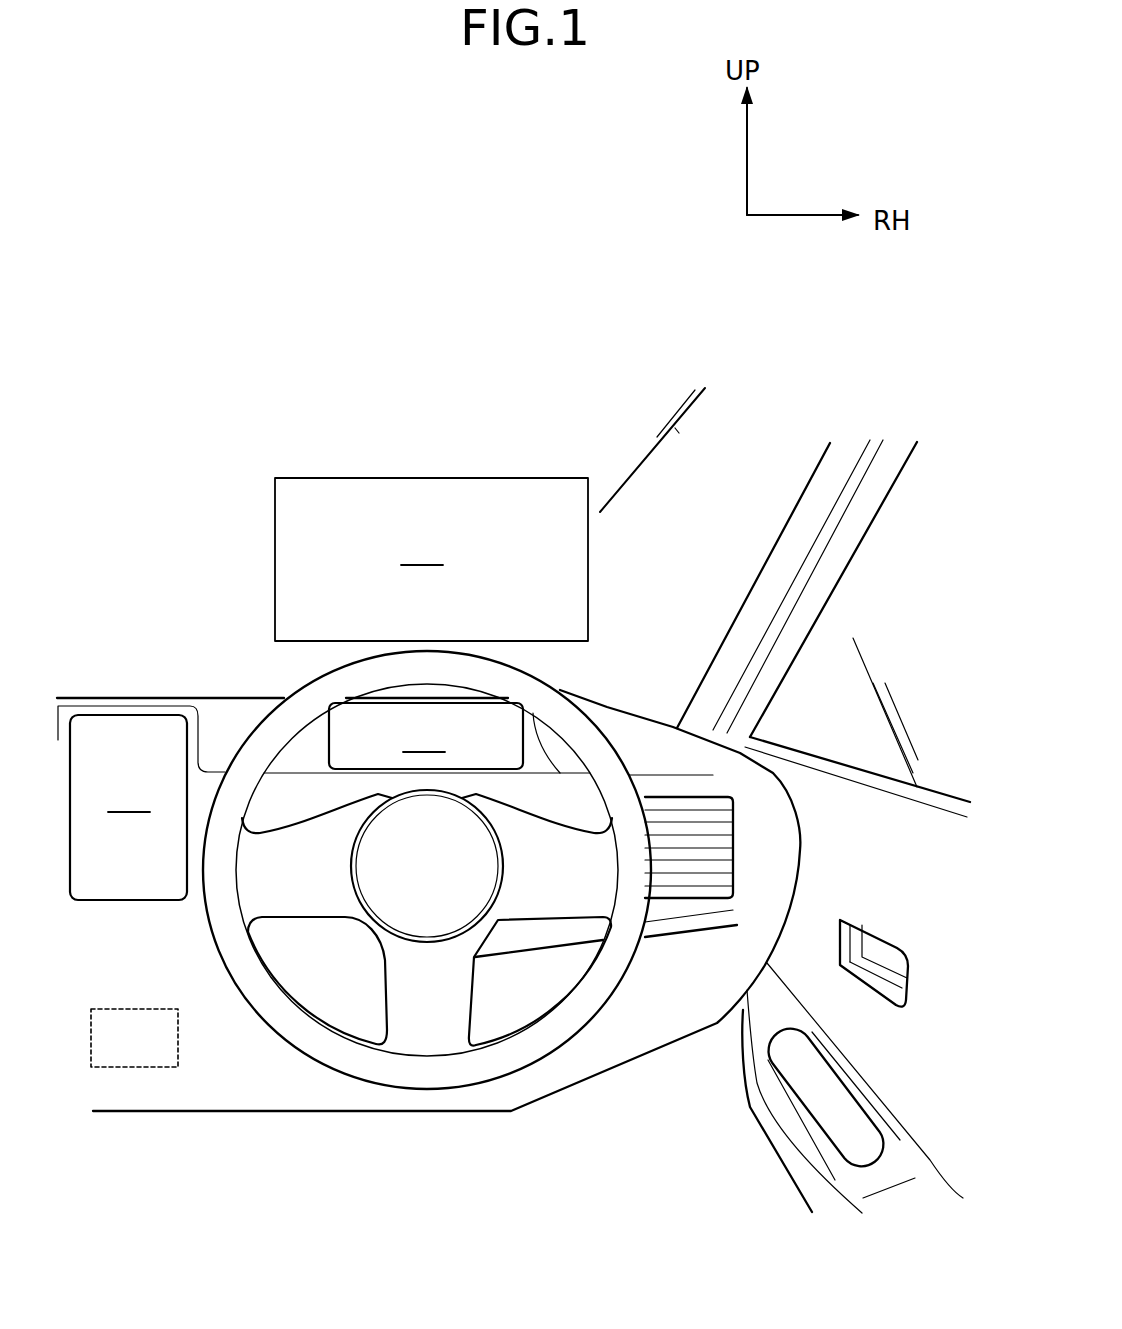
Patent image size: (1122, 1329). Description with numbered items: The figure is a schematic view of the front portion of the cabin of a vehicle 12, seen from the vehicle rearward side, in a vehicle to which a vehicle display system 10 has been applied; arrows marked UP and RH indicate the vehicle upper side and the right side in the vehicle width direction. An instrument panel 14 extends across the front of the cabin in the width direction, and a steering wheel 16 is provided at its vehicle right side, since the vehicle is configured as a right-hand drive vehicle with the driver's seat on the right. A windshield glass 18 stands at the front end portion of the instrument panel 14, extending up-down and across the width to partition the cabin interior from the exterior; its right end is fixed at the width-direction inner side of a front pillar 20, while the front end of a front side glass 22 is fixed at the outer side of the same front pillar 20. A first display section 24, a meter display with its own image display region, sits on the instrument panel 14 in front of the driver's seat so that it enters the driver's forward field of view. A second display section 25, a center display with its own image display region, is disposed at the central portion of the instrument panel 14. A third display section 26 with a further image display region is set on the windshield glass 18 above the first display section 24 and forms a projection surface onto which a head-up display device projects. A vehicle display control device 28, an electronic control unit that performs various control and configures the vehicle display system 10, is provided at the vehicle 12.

The vehicle display system 10 is at (369, 431).
The vehicle 12 is at (412, 326).
The instrument panel 14 is at (635, 1063).
The steering wheel 16 is at (612, 737).
The windshield glass 18 is at (728, 563).
The front pillar 20 is at (802, 490).
The front side glass 22 is at (938, 740).
The first display section 24 is at (362, 730).
The second display section 25 is at (129, 877).
The third display section 26 is at (431, 476).
The vehicle display control device 28 is at (127, 1067).